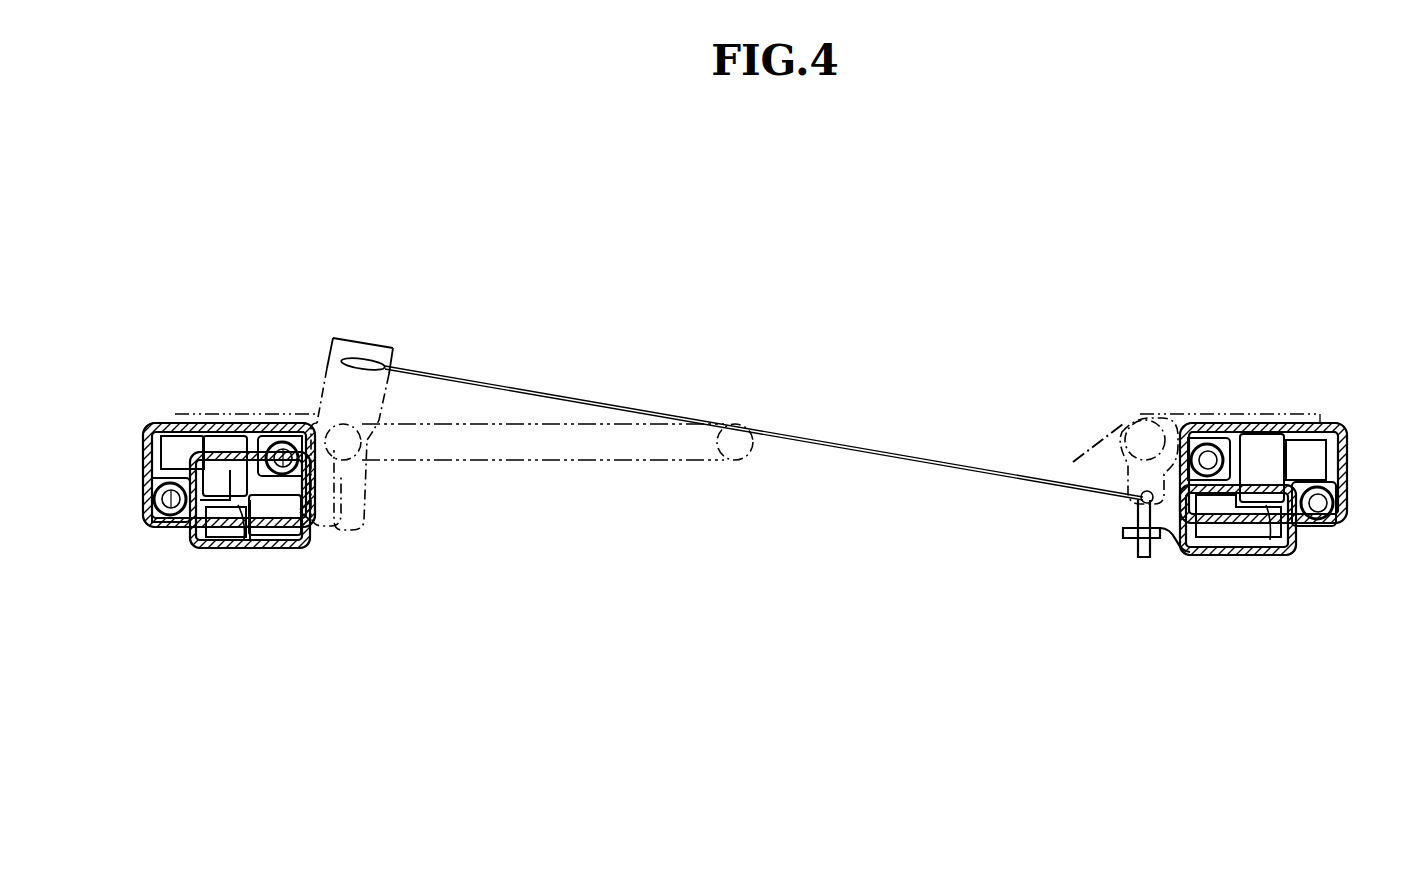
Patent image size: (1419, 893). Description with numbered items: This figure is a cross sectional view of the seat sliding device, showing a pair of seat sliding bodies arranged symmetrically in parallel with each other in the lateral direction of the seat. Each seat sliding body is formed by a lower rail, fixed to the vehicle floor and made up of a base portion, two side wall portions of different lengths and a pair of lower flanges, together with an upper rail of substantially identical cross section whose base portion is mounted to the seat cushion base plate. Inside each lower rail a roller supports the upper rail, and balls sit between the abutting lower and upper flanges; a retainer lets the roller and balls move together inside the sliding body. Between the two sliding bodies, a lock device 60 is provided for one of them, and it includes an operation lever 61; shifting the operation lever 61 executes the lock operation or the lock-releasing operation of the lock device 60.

The lock device 60 is at (380, 338).
The operation lever 61 is at (645, 462).